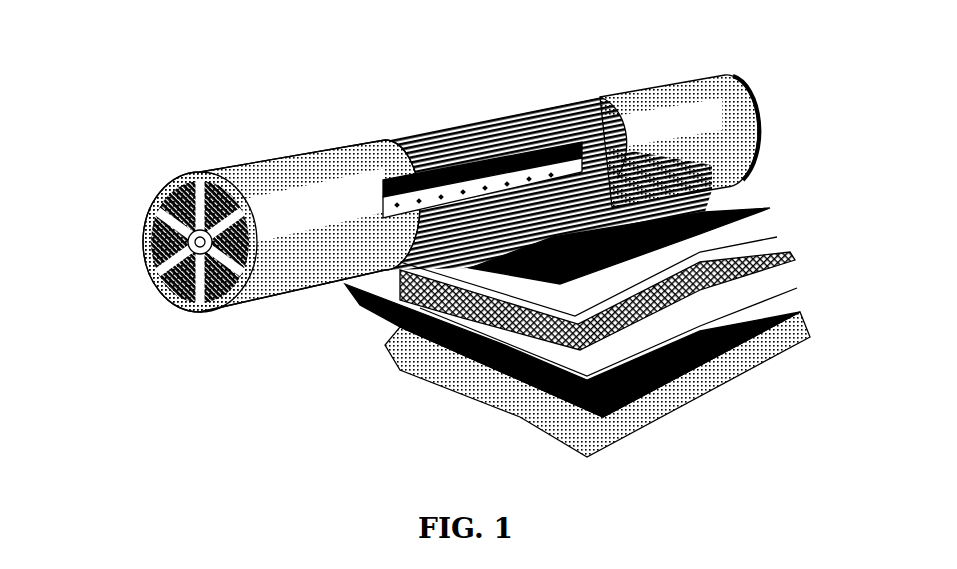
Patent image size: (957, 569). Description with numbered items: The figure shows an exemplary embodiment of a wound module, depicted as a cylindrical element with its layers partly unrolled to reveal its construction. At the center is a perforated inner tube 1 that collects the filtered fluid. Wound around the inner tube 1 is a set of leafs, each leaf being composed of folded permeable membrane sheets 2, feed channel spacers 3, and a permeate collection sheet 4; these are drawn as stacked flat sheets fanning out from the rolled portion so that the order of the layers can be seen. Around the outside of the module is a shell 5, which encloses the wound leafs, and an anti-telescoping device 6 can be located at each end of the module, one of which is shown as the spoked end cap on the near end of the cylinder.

The perforated inner tube 1 is at (491, 173).
The folded permeable membrane sheets 2 is at (791, 236).
The feed channel spacers 3 is at (452, 322).
The permeate collection sheet 4 is at (781, 203).
The shell 5 is at (653, 65).
The anti-telescoping device 6 is at (135, 294).